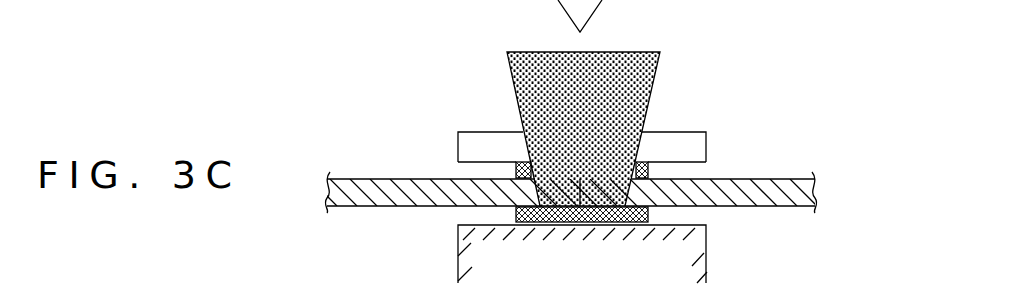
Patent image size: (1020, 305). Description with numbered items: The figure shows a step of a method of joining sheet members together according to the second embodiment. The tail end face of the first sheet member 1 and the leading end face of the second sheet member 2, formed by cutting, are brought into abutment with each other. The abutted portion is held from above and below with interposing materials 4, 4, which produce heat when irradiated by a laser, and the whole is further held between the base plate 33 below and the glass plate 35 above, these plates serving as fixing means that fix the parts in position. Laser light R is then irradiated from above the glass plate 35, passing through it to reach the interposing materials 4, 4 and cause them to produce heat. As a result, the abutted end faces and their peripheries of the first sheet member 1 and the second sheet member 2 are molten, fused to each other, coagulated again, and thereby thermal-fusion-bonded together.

The first sheet member 1 is at (366, 190).
The second sheet member 2 is at (762, 190).
The interposing materials 4 is at (516, 169).
The laser light R is at (542, 95).
The glass plate 35 is at (683, 143).
The base plate 33 is at (598, 283).